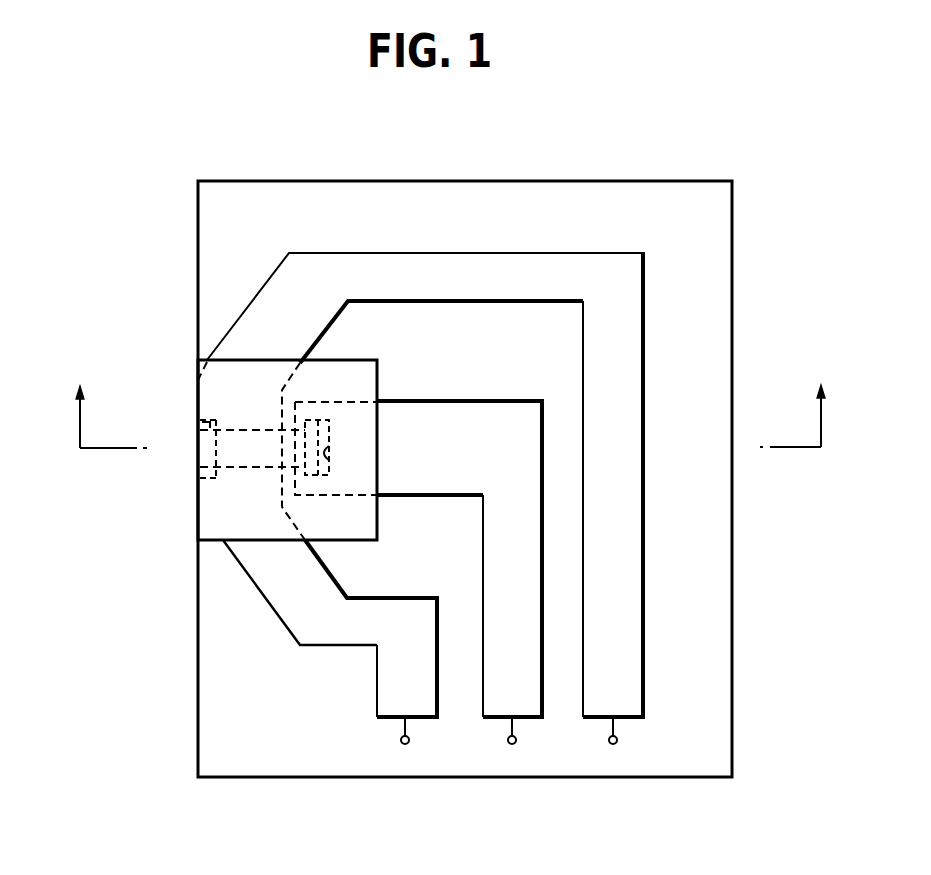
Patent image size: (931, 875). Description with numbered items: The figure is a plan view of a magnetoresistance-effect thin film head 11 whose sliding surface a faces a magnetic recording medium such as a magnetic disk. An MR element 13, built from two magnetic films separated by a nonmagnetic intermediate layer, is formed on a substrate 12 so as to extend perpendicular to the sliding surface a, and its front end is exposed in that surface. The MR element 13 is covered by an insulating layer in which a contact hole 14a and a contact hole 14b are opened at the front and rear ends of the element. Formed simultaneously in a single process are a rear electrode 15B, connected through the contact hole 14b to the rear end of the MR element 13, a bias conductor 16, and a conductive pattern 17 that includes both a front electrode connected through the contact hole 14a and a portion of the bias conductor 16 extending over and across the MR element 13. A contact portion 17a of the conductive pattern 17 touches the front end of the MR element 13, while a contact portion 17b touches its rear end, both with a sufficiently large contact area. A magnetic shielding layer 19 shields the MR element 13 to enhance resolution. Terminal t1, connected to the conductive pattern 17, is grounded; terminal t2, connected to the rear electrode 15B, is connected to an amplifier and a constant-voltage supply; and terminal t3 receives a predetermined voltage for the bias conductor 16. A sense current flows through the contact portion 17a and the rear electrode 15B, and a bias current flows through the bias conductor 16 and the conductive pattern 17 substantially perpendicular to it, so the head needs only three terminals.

The thin film head 11 is at (128, 127).
The substrate 12 is at (215, 732).
The MR element 13 is at (252, 446).
The contact hole 14a is at (207, 430).
The contact hole 14b is at (330, 462).
The rear electrode 15B is at (425, 480).
The bias conductor 16 is at (491, 266).
The conductive pattern 17 is at (218, 520).
The contact portion 17a is at (207, 450).
The contact portion 17b is at (320, 428).
The magnetic shielding layer 19 is at (268, 359).
The sliding surface a is at (198, 492).
The terminal t1 is at (406, 746).
The terminal t2 is at (513, 746).
The terminal t3 is at (614, 746).